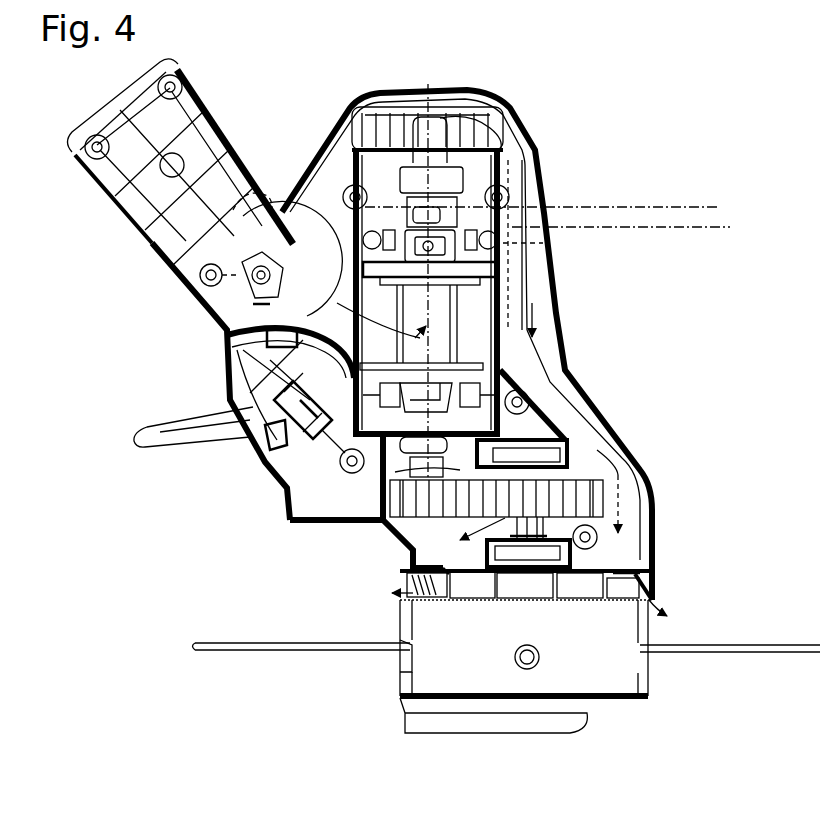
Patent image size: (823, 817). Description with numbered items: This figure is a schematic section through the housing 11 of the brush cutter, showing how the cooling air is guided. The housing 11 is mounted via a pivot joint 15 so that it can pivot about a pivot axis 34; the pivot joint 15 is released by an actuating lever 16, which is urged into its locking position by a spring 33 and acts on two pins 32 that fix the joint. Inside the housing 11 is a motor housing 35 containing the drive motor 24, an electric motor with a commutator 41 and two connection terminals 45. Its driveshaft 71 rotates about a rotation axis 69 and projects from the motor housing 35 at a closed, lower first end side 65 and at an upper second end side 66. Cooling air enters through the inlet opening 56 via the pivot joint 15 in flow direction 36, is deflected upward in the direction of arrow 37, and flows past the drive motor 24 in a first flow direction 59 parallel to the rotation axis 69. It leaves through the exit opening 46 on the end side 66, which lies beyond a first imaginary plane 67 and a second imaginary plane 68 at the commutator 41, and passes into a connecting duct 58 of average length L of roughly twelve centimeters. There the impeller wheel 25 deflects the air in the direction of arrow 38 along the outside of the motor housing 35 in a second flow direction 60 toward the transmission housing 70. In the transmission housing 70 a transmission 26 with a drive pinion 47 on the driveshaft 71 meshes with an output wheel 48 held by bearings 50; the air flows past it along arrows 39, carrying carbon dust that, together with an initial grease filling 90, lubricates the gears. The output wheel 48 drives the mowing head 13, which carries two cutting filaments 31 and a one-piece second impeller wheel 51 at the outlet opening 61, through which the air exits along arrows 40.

The housing 11 is at (567, 352).
The mowing head 13 is at (437, 663).
The pivot joint 15 is at (178, 283).
The actuating lever 16 is at (178, 437).
The drive motor 24 is at (430, 303).
The impeller wheel 25 is at (383, 123).
The transmission 26 is at (413, 530).
The cutting filaments 31 is at (203, 650).
The pins 32 is at (233, 348).
The spring 33 is at (278, 425).
The pivot axis 34 is at (243, 283).
The motor housing 35 is at (543, 243).
The flow direction 36 is at (253, 233).
The arrow 37 is at (280, 465).
The arrow 38 is at (509, 155).
The arrows 39 is at (603, 467).
The arrows 40 is at (652, 577).
The commutator 41 is at (470, 190).
The connection terminals 45 is at (345, 188).
The exit opening 46 is at (413, 117).
The drive pinion 47 is at (392, 492).
The output wheel 48 is at (593, 493).
The bearings 50 is at (548, 443).
The second impeller wheel 51 is at (460, 590).
The inlet opening 56 is at (243, 330).
The connecting duct 58 is at (545, 383).
The first flow direction 59 is at (463, 300).
The second flow direction 60 is at (533, 323).
The outlet opening 61 is at (413, 583).
The first end side 65 is at (290, 522).
The second end side 66 is at (350, 133).
The first imaginary plane 67 is at (710, 228).
The second imaginary plane 68 is at (717, 207).
The rotation axis 69 is at (430, 84).
The transmission housing 70 is at (655, 530).
The driveshaft 71 is at (530, 418).
The grease 90 is at (413, 463).
The average length L is at (535, 128).